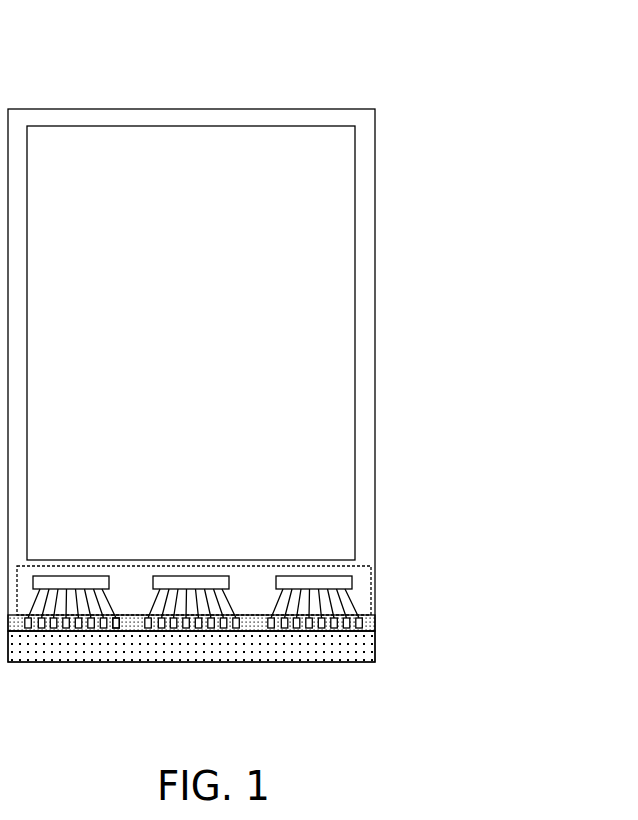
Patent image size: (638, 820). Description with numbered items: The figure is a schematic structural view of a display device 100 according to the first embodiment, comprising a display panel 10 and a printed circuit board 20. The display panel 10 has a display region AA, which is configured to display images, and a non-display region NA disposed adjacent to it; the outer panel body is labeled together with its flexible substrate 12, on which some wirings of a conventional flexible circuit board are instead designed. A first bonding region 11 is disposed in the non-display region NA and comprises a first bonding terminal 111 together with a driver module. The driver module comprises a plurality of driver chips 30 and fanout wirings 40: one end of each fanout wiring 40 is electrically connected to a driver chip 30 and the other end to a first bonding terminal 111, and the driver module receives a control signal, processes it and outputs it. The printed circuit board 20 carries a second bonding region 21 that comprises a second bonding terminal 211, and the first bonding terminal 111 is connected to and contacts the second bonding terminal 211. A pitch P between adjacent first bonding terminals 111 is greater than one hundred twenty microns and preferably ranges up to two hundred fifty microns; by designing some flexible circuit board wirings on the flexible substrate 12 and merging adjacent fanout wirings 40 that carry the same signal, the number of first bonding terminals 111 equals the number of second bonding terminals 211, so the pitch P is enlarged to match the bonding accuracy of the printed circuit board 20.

The display device 100 is at (90, 91).
The display panel 10 is at (257, 385).
The flexible substrate 12 is at (375, 253).
The non-display region NA is at (367, 353).
The display region AA is at (323, 455).
The driver chip 30 is at (328, 578).
The first bonding region 11 is at (360, 577).
The first bonding terminal 111 is at (358, 625).
The printed circuit board 20 is at (362, 657).
The second bonding region 21 is at (262, 636).
The second bonding terminal 211 is at (117, 625).
The fanout wiring 40 is at (70, 605).
The pitch P is at (44, 627).